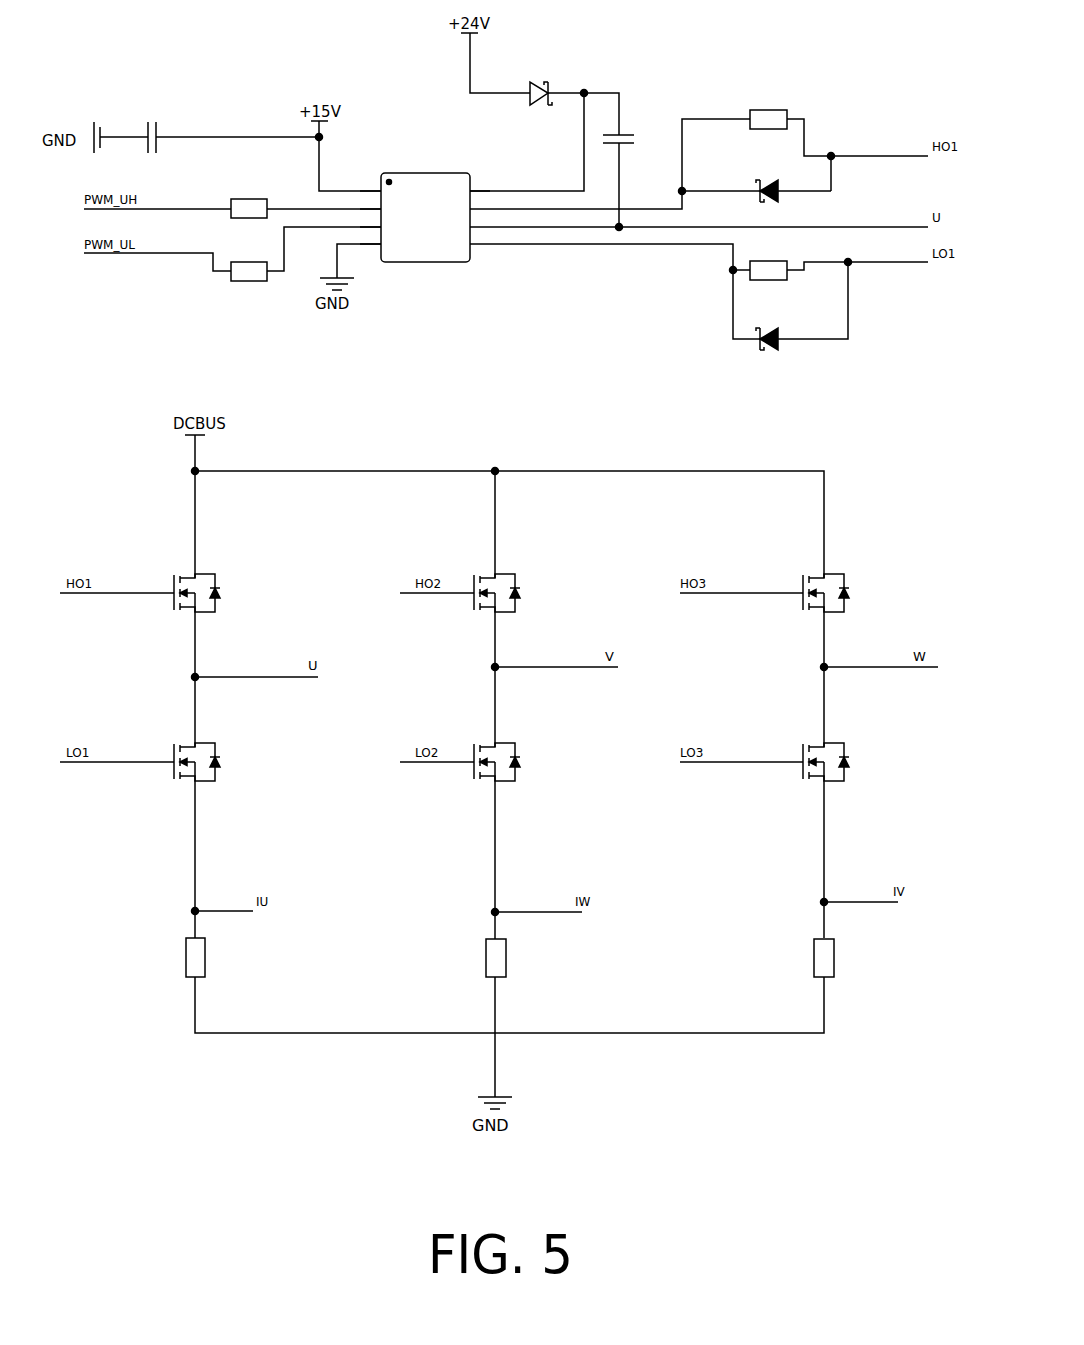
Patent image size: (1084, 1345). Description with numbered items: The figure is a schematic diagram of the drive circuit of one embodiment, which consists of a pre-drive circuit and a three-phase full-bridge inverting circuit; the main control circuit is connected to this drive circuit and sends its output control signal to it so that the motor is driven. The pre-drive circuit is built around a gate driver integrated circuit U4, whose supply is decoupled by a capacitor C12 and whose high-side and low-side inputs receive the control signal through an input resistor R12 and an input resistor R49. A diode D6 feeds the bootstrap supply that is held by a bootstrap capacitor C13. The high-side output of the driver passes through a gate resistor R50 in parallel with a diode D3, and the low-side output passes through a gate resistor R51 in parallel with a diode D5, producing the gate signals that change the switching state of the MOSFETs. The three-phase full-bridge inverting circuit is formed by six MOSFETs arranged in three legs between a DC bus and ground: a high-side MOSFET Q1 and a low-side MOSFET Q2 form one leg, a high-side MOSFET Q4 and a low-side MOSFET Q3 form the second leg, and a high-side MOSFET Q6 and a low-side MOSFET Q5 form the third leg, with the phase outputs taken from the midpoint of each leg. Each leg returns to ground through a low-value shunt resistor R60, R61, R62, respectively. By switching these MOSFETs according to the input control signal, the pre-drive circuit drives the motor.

The capacitor 100nF C12 is at (163, 122).
The resistor 1k (PWM_UH input) R12 is at (249, 193).
The resistor 1k (PWM_UL input) R49 is at (249, 255).
The gate driver IC IR2101SPBF U4 is at (425, 200).
The diode SS310L D6 is at (554, 76).
The bootstrap capacitor 10uF C13 is at (636, 147).
The gate resistor 1k (high side) R50 is at (768, 104).
The schottky diode B5819W (high side) D3 is at (785, 174).
The gate resistor 1k (low side) R51 is at (768, 254).
The schottky diode B5819W (low side) D5 is at (785, 323).
The MOSFET IRF540S (U high side) Q1 is at (227, 596).
The MOSFET IRF540S (U low side) Q2 is at (227, 765).
The MOSFET IRF540S (V low side) Q3 is at (527, 765).
The MOSFET IRF540S (V high side) Q4 is at (527, 596).
The MOSFET IRF540S (W low side) Q5 is at (856, 765).
The MOSFET IRF540S (W high side) Q6 is at (856, 596).
The shunt resistor 0.01R (U) R60 is at (216, 961).
The shunt resistor 0.01R (V) R61 is at (517, 961).
The shunt resistor 0.01R (W) R62 is at (845, 961).